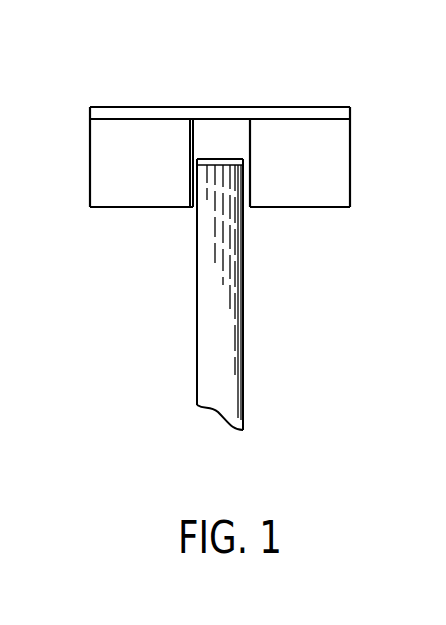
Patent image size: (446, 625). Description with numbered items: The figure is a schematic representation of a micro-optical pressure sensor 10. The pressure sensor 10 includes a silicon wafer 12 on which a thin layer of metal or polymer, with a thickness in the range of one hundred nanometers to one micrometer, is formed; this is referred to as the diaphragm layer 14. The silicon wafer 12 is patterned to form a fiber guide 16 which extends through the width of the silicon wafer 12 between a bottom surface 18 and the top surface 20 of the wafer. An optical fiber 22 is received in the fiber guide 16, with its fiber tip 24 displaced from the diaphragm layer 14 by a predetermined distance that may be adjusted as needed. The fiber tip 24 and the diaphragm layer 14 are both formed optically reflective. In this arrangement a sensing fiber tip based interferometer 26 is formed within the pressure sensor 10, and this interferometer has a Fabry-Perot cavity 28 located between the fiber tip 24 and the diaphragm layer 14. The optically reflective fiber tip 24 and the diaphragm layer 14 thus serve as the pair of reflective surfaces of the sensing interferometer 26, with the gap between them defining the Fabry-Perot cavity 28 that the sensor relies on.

The pressure sensor 10 is at (268, 70).
The silicon wafer 12 is at (338, 165).
The diaphragm layer 14 is at (340, 114).
The fiber guide 16 is at (248, 207).
The bottom surface 18 is at (143, 207).
The top surface 20 is at (110, 120).
The optical fiber 22 is at (230, 355).
The fiber tip 24 is at (207, 156).
The sensing fiber tip based interferometer 26 is at (187, 130).
The Fabry-Perot cavity 28 is at (227, 128).